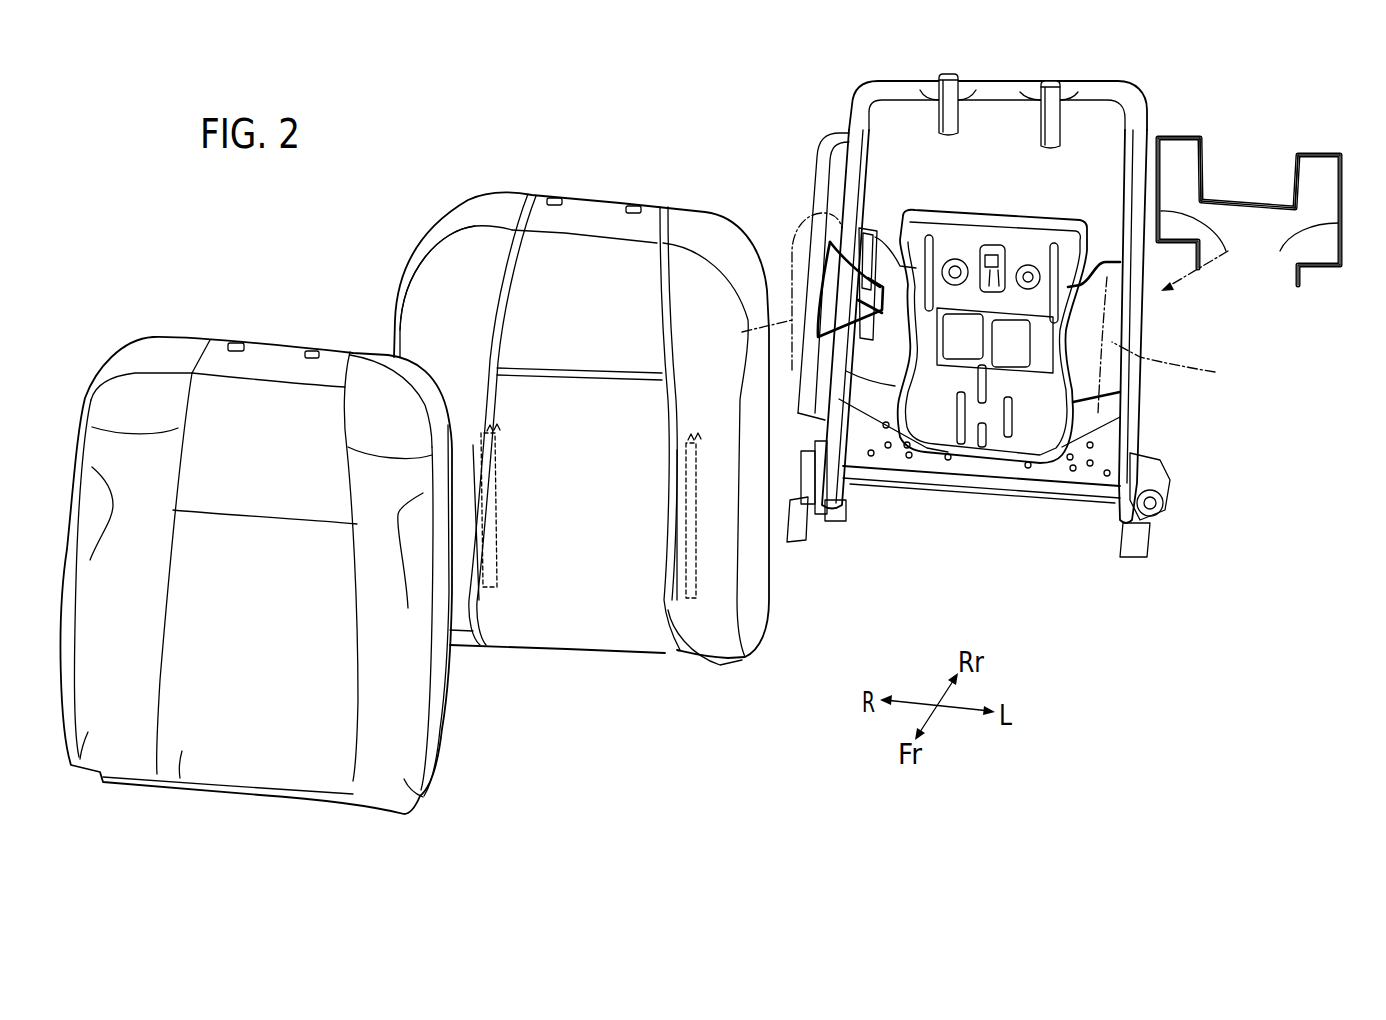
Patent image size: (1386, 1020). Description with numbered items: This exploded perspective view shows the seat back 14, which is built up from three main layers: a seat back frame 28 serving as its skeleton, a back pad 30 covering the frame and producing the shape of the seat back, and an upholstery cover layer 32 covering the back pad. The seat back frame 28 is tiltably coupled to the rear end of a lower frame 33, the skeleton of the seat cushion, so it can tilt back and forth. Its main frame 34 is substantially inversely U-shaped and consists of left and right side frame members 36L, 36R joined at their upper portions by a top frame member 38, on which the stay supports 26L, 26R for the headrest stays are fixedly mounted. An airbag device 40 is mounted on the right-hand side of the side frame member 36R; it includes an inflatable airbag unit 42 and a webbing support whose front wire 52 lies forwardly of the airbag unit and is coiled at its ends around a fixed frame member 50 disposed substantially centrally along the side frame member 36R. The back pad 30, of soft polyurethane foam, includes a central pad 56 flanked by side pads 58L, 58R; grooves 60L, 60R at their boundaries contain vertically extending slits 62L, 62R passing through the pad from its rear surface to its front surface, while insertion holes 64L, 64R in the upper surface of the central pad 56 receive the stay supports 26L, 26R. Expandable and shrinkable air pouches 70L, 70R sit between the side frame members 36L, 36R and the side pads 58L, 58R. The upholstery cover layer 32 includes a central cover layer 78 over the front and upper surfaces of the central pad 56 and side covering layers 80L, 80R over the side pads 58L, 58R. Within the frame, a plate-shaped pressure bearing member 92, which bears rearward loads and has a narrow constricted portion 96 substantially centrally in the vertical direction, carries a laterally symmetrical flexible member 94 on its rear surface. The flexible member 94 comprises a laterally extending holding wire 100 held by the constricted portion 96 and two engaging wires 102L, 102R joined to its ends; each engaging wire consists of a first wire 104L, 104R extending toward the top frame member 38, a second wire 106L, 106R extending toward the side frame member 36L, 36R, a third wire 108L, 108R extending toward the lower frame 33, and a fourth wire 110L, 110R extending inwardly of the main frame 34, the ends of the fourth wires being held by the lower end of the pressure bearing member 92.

The seat back 14 is at (354, 213).
The upholstery cover layer 32 is at (277, 312).
The central cover layer 78 is at (180, 770).
The side covering layer 80R is at (80, 773).
The side covering layer 80L is at (420, 794).
The back pad 30 is at (583, 161).
The side pad 58R is at (448, 223).
The side pad 58L is at (750, 620).
The groove 60R is at (533, 194).
The groove 60L is at (667, 206).
The insertion hole 64R is at (554, 197).
The insertion hole 64L is at (632, 205).
The slit 62R is at (465, 600).
The slit 62L is at (668, 602).
The central pad 56 is at (547, 636).
The air pouch 70R is at (770, 291).
The air pouch 70L is at (1173, 345).
The airbag unit 42 is at (803, 398).
The airbag device 40 is at (799, 163).
The fixed frame member 50 is at (860, 190).
The front wire 52 is at (826, 241).
The seat back frame 28 is at (1084, 68).
The main frame 34 is at (993, 271).
The top frame member 38 is at (902, 90).
The side frame member 36R is at (860, 118).
The side frame member 36L is at (1132, 429).
The stay support 26R is at (947, 76).
The stay support 26L is at (1052, 83).
The pressure bearing member 92 is at (978, 229).
The constricted portion 96 is at (1060, 363).
The lower frame 33 is at (1141, 540).
The flexible member 94 is at (1229, 204).
The holding wire 100 is at (1237, 208).
The engaging wire 102R is at (1169, 126).
The engaging wire 102L is at (1307, 148).
The first wire 104R is at (1205, 167).
The first wire 104L is at (1296, 176).
The second wire 106R is at (1181, 137).
The second wire 106L is at (1322, 156).
The third wire 108R is at (1227, 265).
The third wire 108L is at (1283, 278).
The fourth wire 110R is at (1180, 250).
The fourth wire 110L is at (1322, 270).